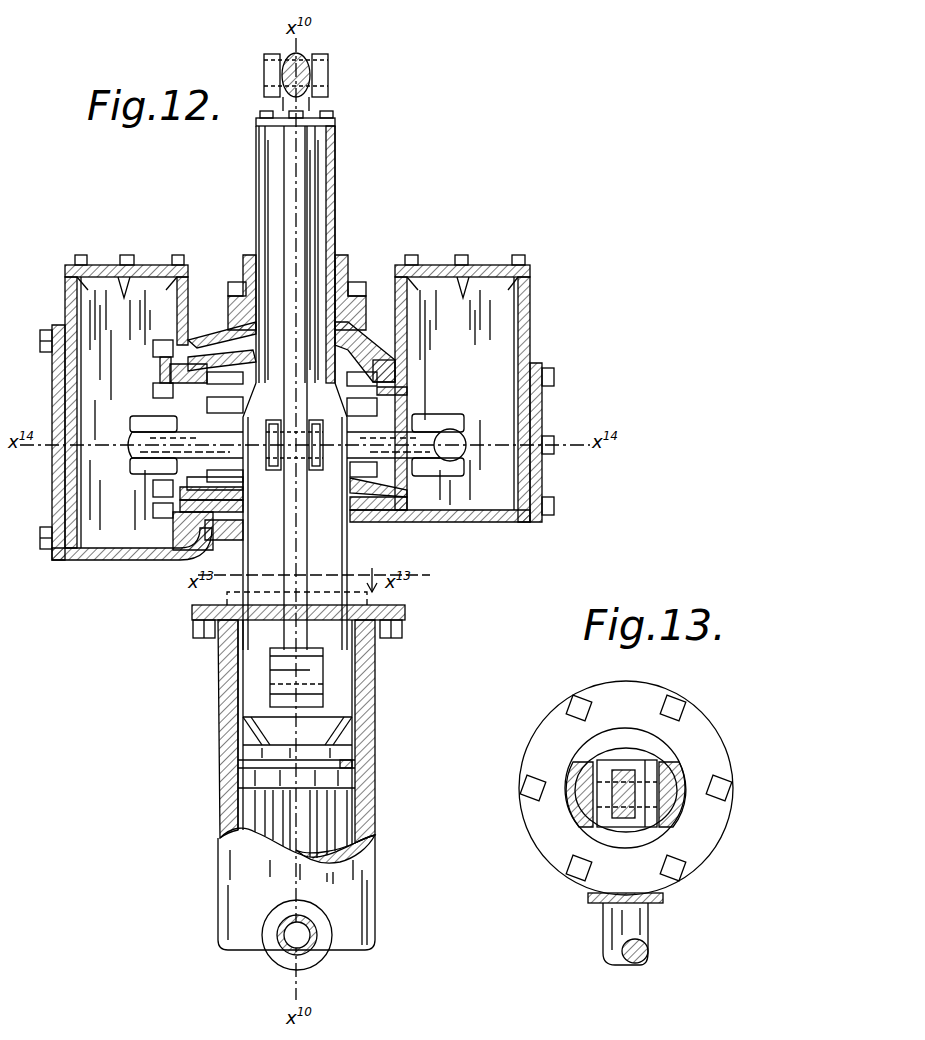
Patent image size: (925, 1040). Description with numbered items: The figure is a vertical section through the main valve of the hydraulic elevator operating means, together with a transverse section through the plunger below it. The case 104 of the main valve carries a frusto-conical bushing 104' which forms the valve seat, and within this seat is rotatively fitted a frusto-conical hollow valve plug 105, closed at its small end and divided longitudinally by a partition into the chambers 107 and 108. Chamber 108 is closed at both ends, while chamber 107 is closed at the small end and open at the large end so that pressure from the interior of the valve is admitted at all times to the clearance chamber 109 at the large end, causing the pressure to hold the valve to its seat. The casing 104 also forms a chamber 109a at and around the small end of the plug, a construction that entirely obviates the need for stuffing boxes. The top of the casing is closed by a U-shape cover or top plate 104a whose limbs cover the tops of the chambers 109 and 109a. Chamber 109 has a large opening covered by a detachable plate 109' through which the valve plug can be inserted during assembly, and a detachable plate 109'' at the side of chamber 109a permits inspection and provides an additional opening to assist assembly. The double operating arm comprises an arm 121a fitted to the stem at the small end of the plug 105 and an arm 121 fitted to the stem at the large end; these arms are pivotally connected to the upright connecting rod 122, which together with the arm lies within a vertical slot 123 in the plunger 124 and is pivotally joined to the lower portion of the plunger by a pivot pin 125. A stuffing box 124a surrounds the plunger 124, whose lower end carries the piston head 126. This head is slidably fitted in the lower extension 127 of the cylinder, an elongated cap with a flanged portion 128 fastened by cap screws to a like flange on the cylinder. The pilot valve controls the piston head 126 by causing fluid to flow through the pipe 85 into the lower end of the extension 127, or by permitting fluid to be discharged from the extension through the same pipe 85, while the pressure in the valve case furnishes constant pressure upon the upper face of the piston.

In FIG. 12, the pipe 85 is at (318, 948).
In FIG. 13, the pipe 85 is at (603, 923).
In FIG. 12, the case 104 is at (312, 449).
In FIG. 12, the U-shape cover or top plate 104a is at (172, 252).
In FIG. 12, the frusto-conical bushing 104' is at (373, 358).
In FIG. 12, the frusto-conical hollow valve plug 105 is at (183, 500).
In FIG. 12, the chamber 107 is at (210, 427).
In FIG. 12, the chamber 108 is at (197, 483).
In FIG. 12, the clearance chamber 109 is at (117, 410).
In FIG. 12, the detachable plate 109' is at (43, 461).
In FIG. 12, the detachable plate 109'' is at (573, 442).
In FIG. 12, the chamber 109a is at (458, 397).
In FIG. 12, the arm 121 is at (152, 450).
In FIG. 12, the arm 121a is at (426, 437).
In FIG. 12, the upright connecting rod 122 is at (307, 550).
In FIG. 13, the upright connecting rod 122 is at (635, 776).
In FIG. 12, the vertical slot 123 is at (277, 632).
In FIG. 13, the vertical slot 123 is at (643, 813).
In FIG. 12, the plunger 124 is at (336, 206).
In FIG. 13, the stuffing box 124a is at (670, 774).
In FIG. 12, the pivot pin 125 is at (345, 688).
In FIG. 12, the piston head 126 is at (357, 766).
In FIG. 12, the lower extension 127 is at (376, 745).
In FIG. 12, the flanged portion 128 is at (405, 618).
In FIG. 13, the flanged portion 128 is at (592, 690).